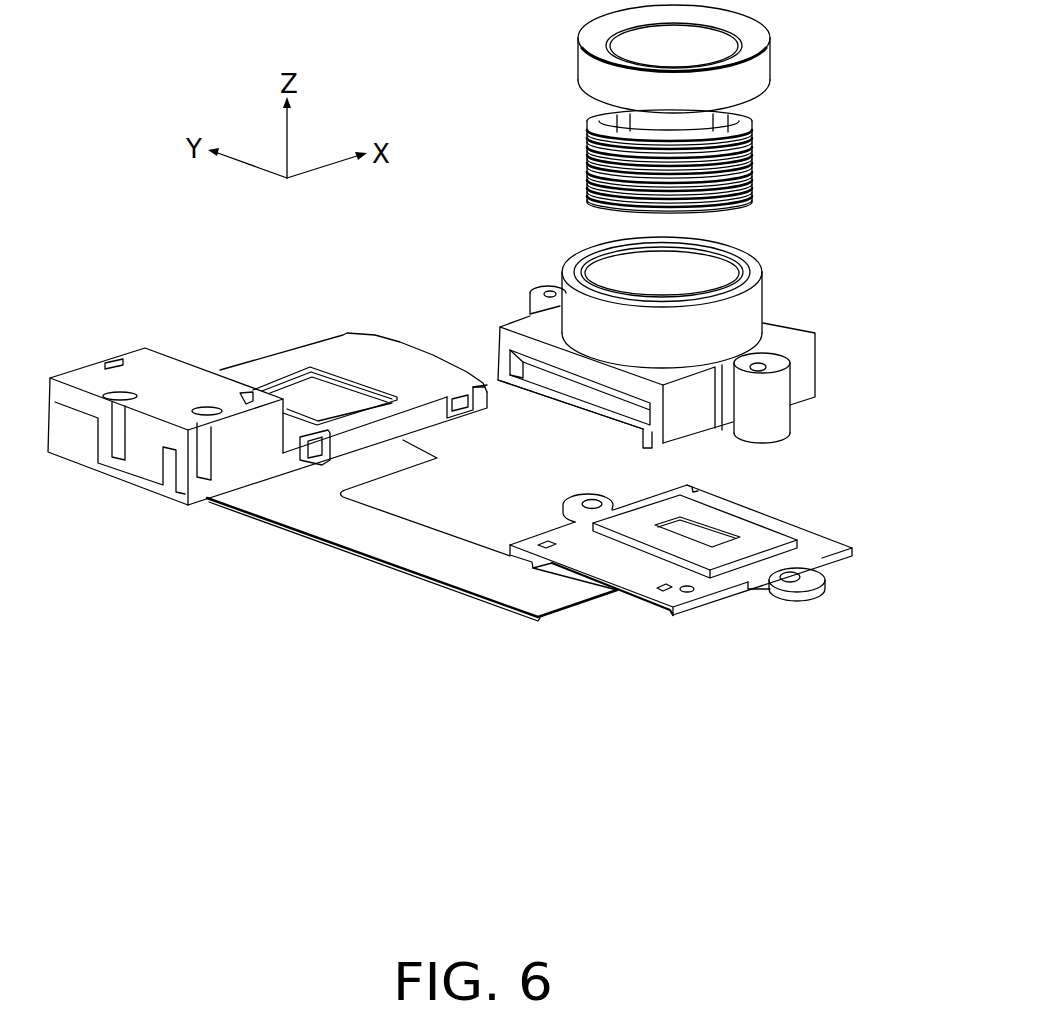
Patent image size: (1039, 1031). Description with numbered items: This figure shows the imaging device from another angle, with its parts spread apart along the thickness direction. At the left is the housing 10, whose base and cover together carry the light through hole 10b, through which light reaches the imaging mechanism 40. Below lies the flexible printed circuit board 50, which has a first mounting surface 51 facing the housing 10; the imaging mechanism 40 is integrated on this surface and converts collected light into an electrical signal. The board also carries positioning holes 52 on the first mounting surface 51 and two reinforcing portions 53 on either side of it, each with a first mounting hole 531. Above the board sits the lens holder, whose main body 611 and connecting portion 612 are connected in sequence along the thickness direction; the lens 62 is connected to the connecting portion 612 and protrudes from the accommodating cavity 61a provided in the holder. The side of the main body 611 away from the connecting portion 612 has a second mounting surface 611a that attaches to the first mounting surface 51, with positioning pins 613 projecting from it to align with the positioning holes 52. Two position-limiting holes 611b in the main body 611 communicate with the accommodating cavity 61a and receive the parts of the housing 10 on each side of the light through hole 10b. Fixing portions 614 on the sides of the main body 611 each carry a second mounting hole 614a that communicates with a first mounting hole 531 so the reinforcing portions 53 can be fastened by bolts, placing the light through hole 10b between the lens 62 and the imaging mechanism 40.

The housing 10 is at (267, 405).
The light through hole 10b is at (299, 381).
The imaging mechanism 40 is at (745, 533).
The flexible printed circuit board 50 is at (452, 567).
The first mounting surface 51 is at (685, 579).
The positioning holes 52 is at (691, 600).
The reinforcing portions 53 is at (567, 506).
The first mounting hole 531 is at (806, 575).
The accommodating cavity 61a is at (586, 432).
The main body 611 is at (689, 354).
The second mounting surface 611a is at (535, 400).
The position-limiting holes 611b is at (523, 363).
The connecting portion 612 is at (750, 308).
The positioning pins 613 is at (652, 448).
The fixing portions 614 is at (823, 389).
The second mounting hole 614a is at (778, 362).
The lens 62 is at (760, 78).